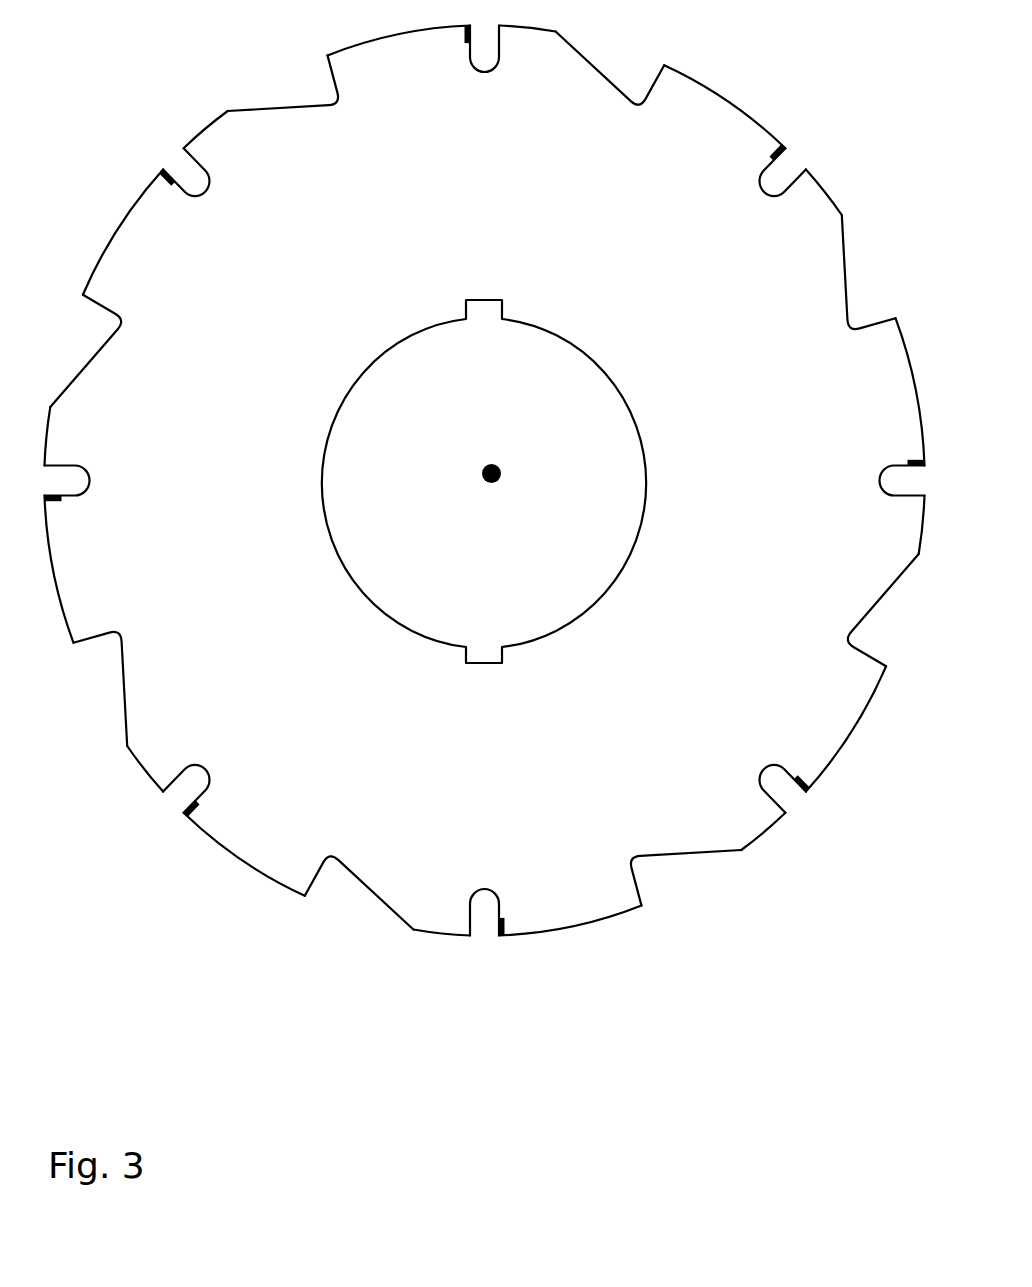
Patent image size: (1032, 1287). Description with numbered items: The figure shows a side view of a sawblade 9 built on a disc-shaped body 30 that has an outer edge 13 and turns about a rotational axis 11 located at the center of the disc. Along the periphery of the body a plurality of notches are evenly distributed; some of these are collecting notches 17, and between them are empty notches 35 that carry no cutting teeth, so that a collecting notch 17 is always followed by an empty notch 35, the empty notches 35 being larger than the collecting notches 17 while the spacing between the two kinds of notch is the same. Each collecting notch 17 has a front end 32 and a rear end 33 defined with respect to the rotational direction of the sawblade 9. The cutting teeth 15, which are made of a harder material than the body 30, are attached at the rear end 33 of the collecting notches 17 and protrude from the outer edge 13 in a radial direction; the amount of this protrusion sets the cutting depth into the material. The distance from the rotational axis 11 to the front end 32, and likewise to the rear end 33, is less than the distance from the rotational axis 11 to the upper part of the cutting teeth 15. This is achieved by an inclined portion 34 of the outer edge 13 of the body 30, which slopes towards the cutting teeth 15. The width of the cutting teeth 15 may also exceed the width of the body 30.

The sawblade 9 is at (108, 179).
The rotational axis 11 is at (492, 474).
The outer edge 13 is at (65, 630).
The cutting teeth 15 is at (187, 818).
The collecting notches 17 is at (183, 815).
The disc-shaped body 30 is at (562, 888).
The front end 32 is at (472, 933).
The rear end 33 is at (495, 937).
The inclined portion 34 is at (227, 850).
The empty notches 35 is at (350, 887).